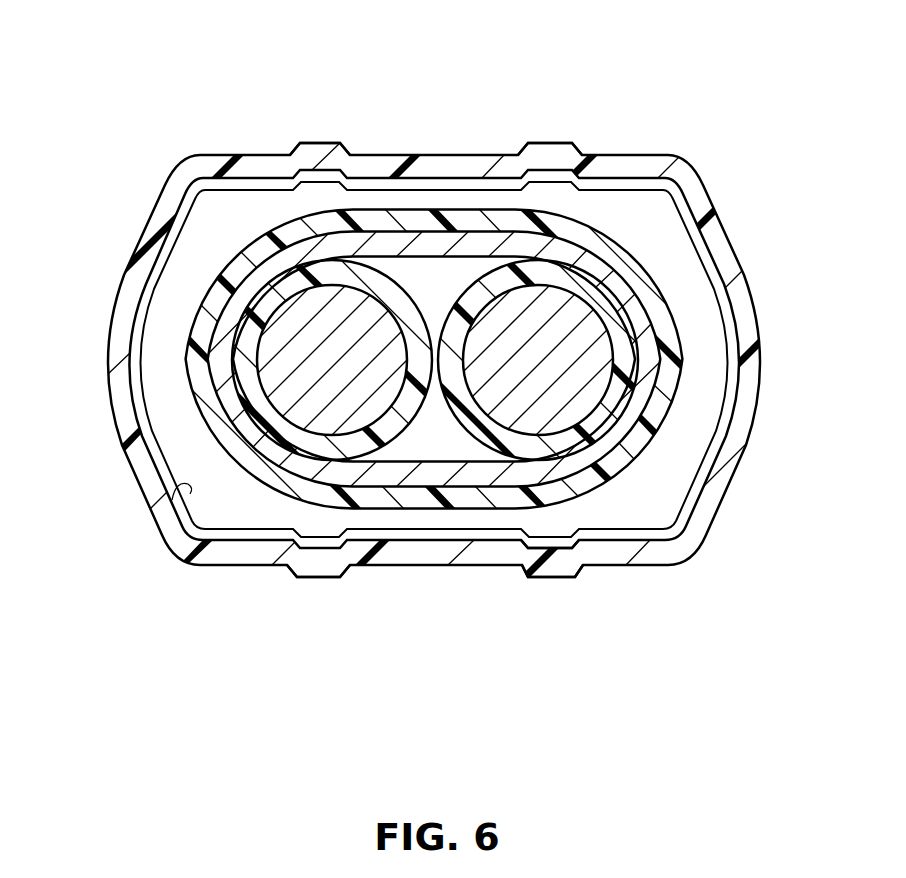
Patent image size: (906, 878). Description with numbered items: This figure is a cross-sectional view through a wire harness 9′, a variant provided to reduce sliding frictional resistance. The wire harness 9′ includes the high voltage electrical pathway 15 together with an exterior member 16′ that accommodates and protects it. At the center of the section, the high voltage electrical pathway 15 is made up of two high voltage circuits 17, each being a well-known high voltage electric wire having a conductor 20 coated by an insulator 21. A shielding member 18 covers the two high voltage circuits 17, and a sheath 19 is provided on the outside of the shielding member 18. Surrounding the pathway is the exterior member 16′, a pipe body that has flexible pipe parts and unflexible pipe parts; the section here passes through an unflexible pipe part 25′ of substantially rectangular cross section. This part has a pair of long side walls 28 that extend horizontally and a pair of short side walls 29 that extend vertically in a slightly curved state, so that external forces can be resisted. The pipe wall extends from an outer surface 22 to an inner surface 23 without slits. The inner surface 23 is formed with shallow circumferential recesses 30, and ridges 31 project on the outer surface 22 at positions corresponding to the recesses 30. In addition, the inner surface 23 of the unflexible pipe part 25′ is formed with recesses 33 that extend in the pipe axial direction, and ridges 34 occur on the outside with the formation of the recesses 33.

The wire harness 9′ is at (496, 100).
The high voltage electrical pathway 15 is at (248, 490).
The exterior member 16′ is at (648, 572).
The high voltage circuit 17 is at (267, 52).
The shielding member 18 is at (463, 475).
The sheath 19 is at (415, 495).
The conductor 20 is at (290, 317).
The insulator 21 is at (323, 270).
The outer surface 22 is at (143, 503).
The inner surface 23 is at (172, 500).
The unflexible pipe part 25′ is at (388, 152).
The long side wall 28 is at (452, 166).
The short side wall 29 is at (142, 228).
The recess 30 is at (617, 533).
The ridge 31 is at (628, 535).
The recess 33 is at (552, 541).
The ridge 34 is at (321, 143).